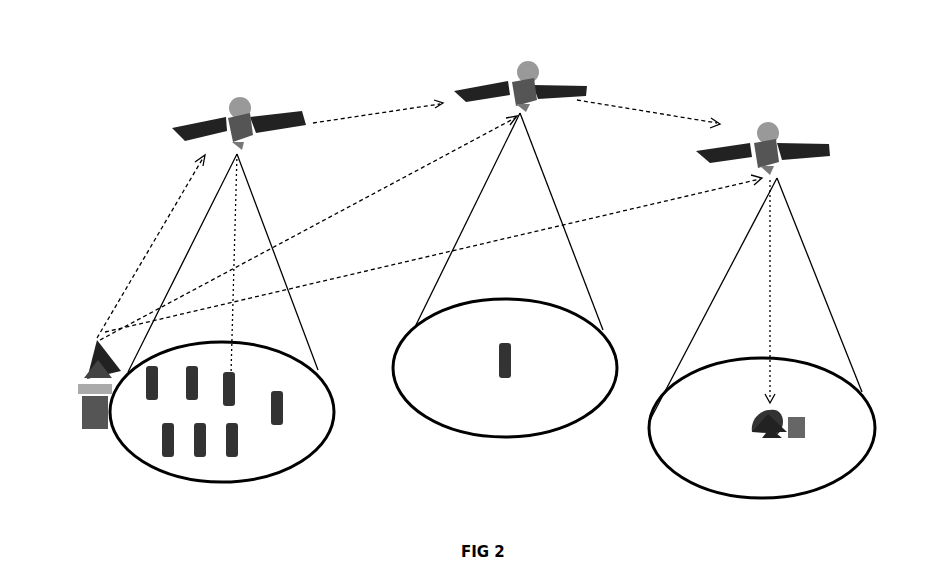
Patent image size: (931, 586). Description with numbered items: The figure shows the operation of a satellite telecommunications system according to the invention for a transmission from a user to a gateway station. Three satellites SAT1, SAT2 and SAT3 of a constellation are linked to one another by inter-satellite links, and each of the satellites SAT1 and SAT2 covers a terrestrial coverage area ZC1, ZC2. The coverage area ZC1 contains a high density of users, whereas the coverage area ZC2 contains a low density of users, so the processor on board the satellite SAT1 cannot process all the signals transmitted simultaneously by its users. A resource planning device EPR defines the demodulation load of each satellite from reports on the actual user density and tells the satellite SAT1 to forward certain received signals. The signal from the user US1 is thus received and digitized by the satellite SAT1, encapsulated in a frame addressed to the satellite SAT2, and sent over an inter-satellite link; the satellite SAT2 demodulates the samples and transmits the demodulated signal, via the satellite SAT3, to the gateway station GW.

The satellite SAT1 is at (288, 104).
The satellite SAT2 is at (540, 53).
The satellite SAT3 is at (772, 113).
The resource planning device EPR is at (86, 357).
The coverage area ZC1 is at (297, 362).
The coverage area ZC2 is at (575, 313).
The user US1 is at (237, 382).
The gateway station GW is at (788, 400).